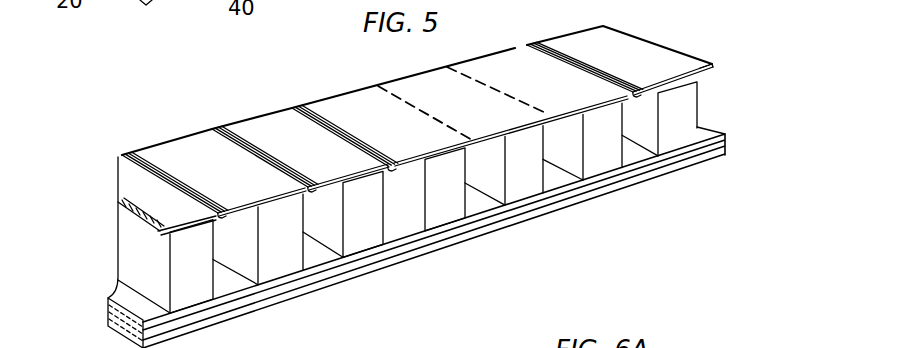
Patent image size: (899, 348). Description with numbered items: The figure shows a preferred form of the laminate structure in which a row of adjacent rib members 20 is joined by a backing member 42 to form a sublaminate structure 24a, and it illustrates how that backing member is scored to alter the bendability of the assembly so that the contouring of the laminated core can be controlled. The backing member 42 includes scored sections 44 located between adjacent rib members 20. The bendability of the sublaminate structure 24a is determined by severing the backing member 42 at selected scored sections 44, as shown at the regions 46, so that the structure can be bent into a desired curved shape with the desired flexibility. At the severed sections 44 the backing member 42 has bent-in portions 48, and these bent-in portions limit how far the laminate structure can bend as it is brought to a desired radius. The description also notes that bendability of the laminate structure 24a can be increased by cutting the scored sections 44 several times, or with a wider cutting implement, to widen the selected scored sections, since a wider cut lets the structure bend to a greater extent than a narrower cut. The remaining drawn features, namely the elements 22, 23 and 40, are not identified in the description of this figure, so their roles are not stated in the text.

The rib member 20 is at (200, 277).
The base rail 22 is at (716, 150).
The cover end edge 23 is at (708, 70).
The sublaminate structure 24a is at (693, 25).
The partition 40 is at (633, 103).
The backing member 42 is at (122, 212).
The scored section 44 is at (392, 62).
The region 46 is at (127, 153).
The bent-in portion 48 is at (395, 167).